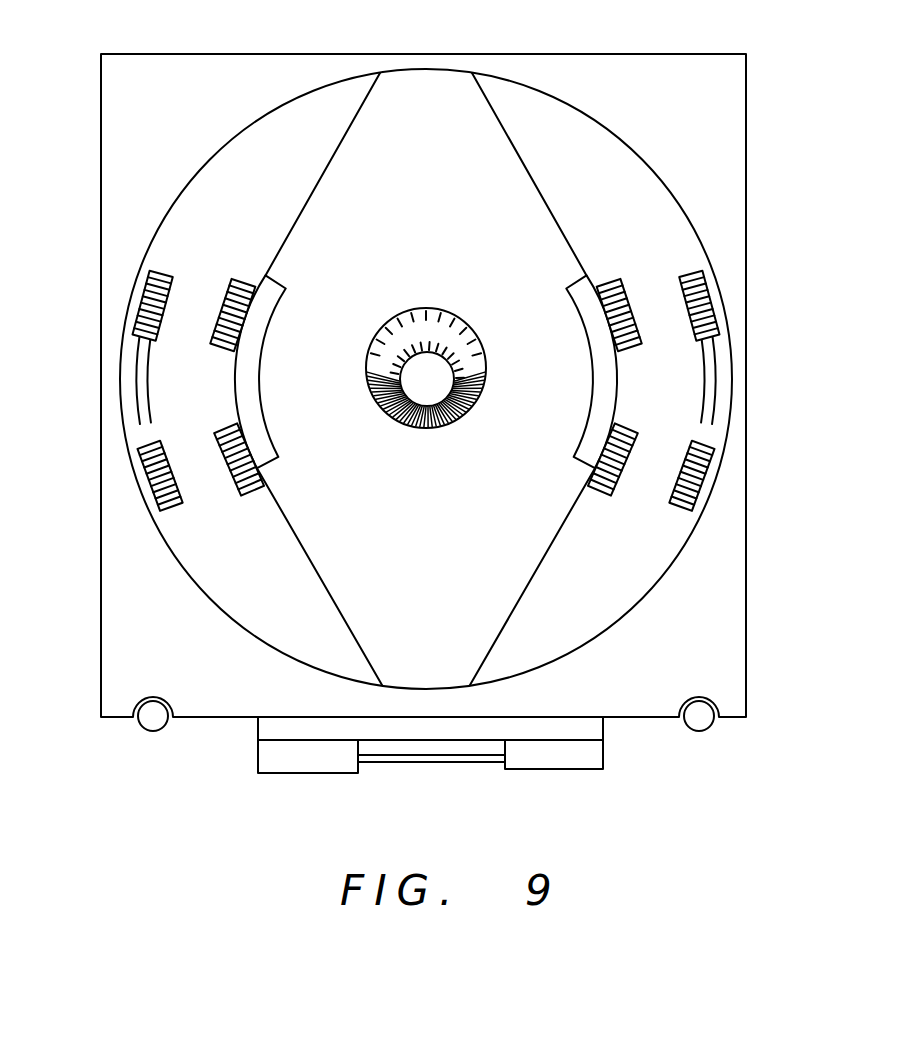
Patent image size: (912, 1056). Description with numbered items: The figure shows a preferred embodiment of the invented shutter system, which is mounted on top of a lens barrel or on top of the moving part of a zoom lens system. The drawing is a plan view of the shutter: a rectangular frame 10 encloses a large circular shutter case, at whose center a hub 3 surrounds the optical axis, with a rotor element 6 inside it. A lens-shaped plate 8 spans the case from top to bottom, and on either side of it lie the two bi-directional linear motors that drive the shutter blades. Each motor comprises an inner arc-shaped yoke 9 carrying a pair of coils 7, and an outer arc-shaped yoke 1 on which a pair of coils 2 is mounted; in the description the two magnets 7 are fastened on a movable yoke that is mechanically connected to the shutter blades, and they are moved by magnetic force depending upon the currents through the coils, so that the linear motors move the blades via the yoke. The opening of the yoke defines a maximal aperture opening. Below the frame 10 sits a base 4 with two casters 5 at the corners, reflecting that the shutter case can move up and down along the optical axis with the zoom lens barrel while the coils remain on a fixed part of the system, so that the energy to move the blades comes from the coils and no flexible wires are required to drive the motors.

The outer arc-shaped yoke 1 is at (147, 383).
The outer coil 2 is at (155, 270).
The hub / bearing 3 is at (425, 287).
The base 4 is at (343, 732).
The caster 5 is at (153, 722).
The rotor shaft 6 is at (487, 371).
The magnets 7 is at (238, 266).
The lens-shaped rotor plate 8 is at (450, 110).
The inner arc-shaped yoke 9 is at (255, 366).
The frame 10 is at (695, 48).